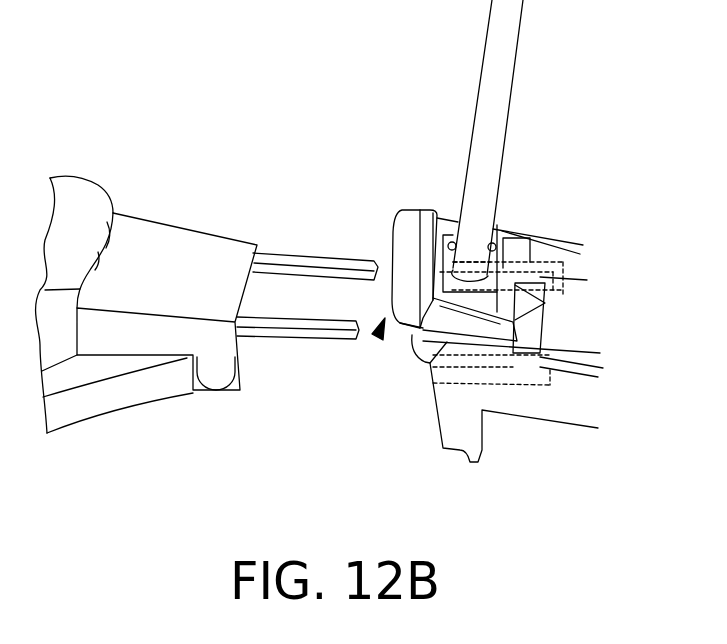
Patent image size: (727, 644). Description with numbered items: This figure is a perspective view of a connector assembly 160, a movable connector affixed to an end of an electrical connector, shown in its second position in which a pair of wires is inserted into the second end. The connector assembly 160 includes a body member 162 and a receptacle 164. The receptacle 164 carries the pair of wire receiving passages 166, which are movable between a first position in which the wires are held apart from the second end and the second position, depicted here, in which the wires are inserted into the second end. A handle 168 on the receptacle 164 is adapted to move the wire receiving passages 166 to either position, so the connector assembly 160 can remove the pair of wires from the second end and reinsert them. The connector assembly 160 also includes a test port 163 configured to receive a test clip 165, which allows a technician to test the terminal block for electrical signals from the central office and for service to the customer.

The connector assembly 160 is at (378, 343).
The body member 162 is at (545, 333).
The test port 163 is at (507, 387).
The receptacle 164 is at (425, 208).
The test clip 165 is at (123, 393).
The wire receiving passages 166 is at (583, 253).
The handle 168 is at (402, 227).